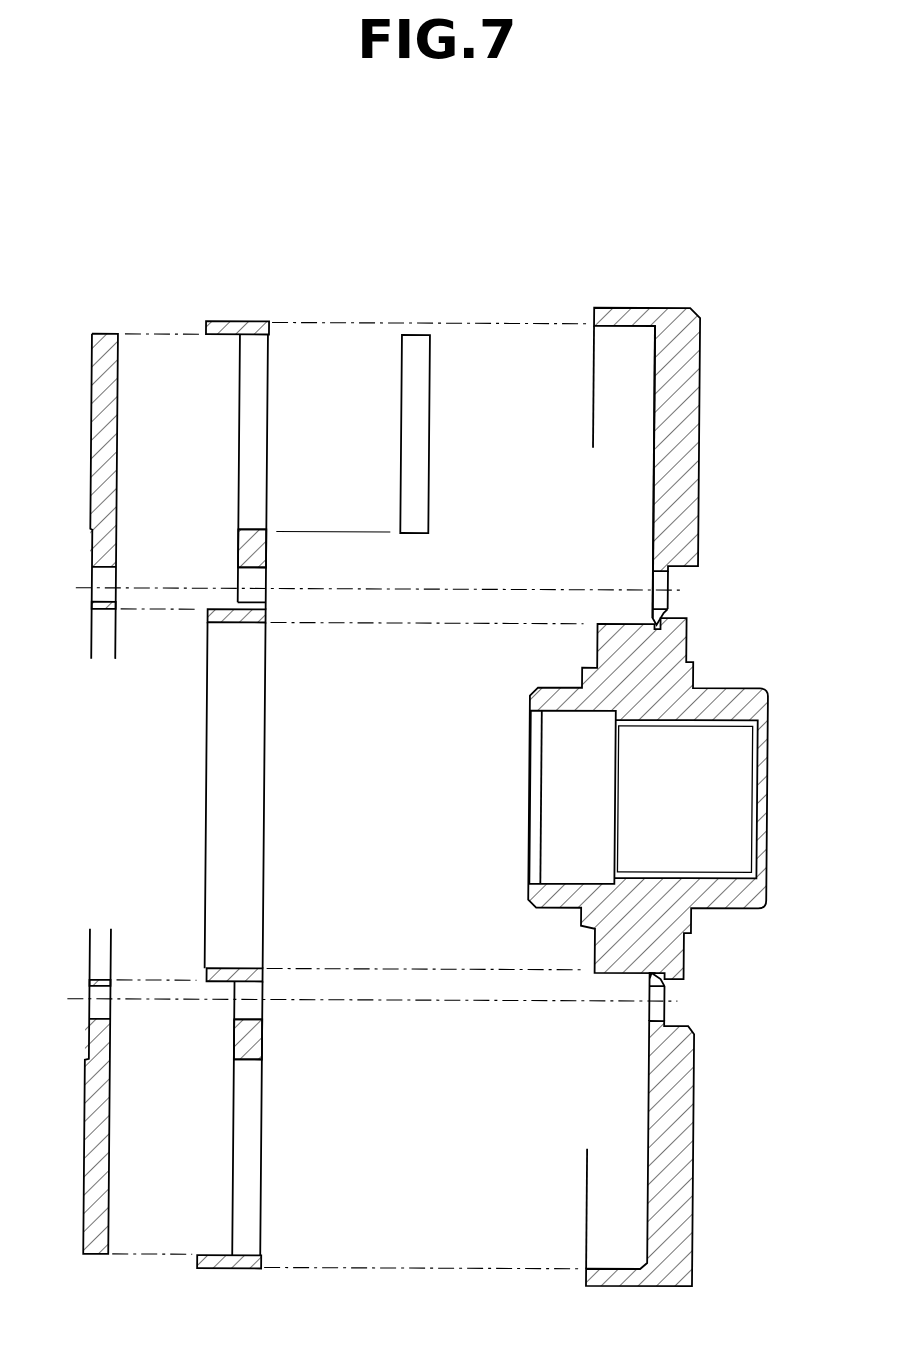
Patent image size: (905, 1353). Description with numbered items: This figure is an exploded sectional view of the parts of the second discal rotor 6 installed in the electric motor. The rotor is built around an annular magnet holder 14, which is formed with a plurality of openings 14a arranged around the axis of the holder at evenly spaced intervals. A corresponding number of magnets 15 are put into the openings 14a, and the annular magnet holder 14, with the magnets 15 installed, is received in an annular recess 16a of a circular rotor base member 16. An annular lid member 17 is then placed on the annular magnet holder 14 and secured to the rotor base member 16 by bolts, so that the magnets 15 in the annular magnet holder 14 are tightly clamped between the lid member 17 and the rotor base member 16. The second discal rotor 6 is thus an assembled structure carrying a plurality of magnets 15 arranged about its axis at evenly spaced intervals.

The second discal rotor 6 is at (528, 290).
The annular magnet holder 14 is at (238, 322).
The openings 14a is at (255, 443).
The magnets 15 is at (416, 335).
The circular rotor base member 16 is at (700, 365).
The annular recess 16a is at (654, 488).
The annular lid member 17 is at (104, 335).